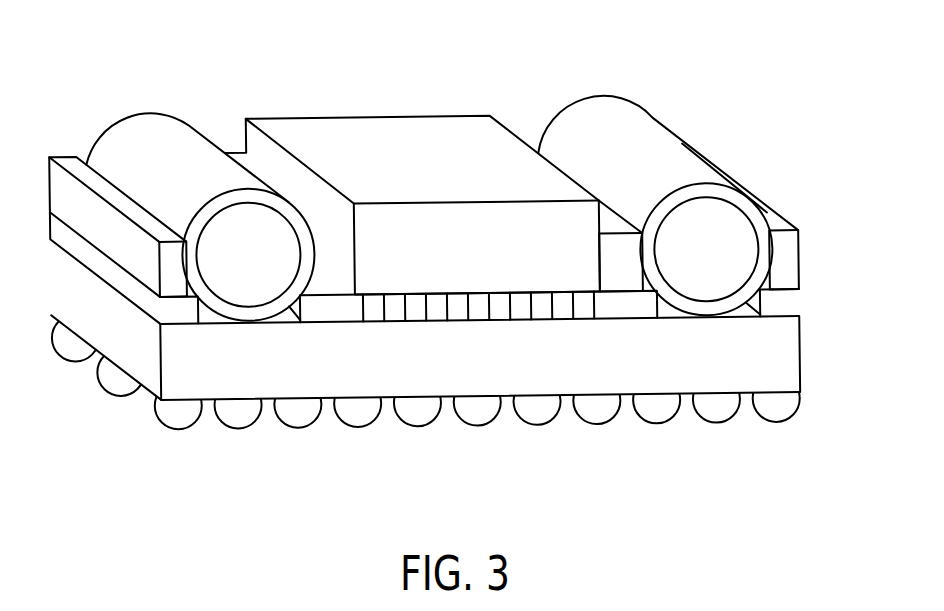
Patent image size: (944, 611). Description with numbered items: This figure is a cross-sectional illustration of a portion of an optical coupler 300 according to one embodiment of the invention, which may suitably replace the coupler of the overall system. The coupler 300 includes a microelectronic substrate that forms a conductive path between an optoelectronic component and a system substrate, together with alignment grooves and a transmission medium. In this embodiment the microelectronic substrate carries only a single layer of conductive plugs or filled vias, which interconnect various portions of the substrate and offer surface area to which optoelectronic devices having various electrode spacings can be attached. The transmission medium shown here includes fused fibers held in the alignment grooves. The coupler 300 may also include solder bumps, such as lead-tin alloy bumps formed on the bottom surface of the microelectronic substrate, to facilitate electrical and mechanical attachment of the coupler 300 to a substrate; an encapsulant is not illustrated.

The coupler 300 is at (712, 104).